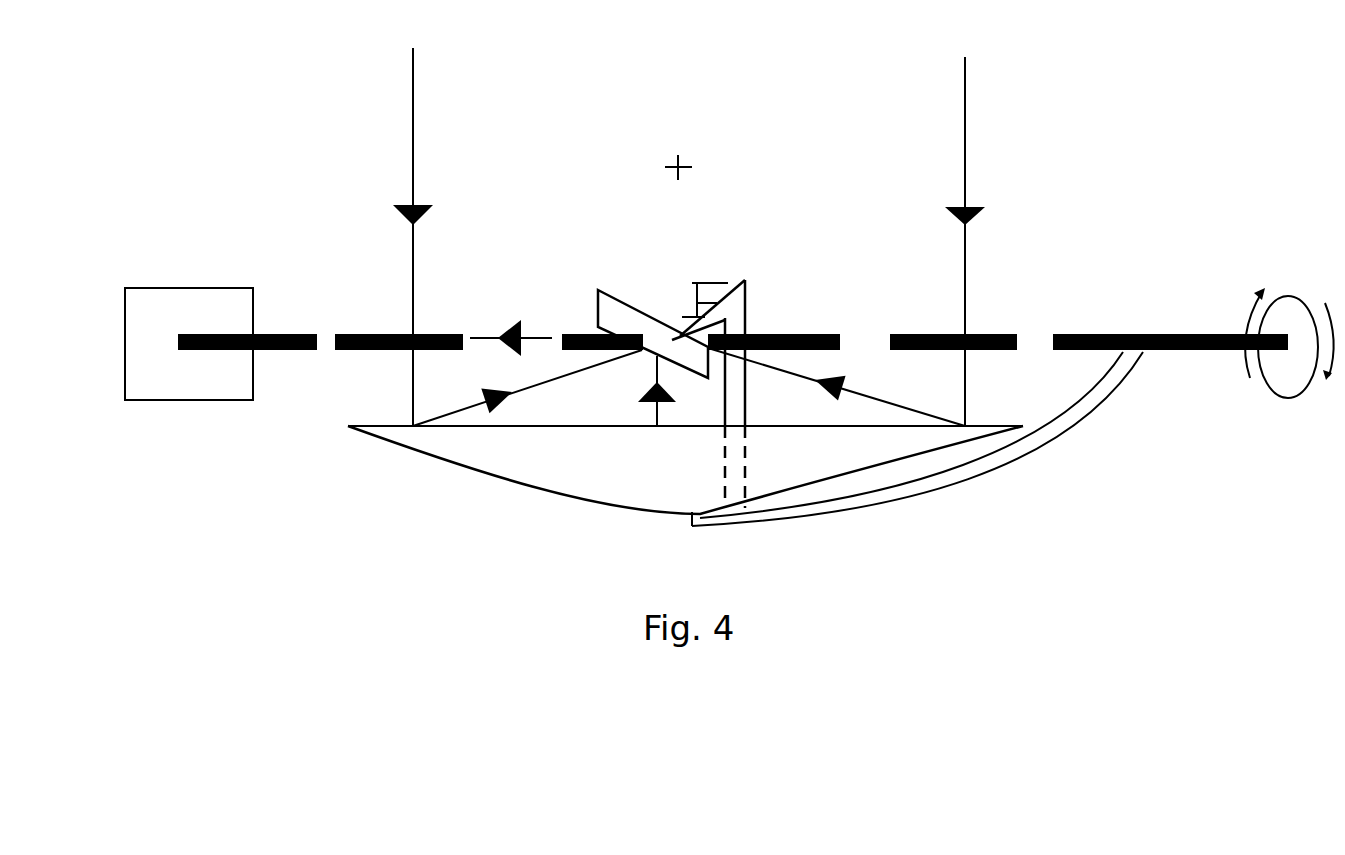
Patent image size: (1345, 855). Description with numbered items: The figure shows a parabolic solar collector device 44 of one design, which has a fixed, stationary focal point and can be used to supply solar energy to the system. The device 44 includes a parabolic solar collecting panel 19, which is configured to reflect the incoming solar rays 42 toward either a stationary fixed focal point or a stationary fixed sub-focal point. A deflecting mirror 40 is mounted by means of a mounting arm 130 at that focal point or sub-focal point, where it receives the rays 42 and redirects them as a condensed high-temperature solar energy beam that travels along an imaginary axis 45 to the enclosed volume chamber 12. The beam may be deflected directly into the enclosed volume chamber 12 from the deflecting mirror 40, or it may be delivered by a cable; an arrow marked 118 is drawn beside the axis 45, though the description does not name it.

The enclosed volume chamber 12 is at (150, 302).
The solar collecting panel 19 is at (480, 467).
The deflecting mirror 40 is at (605, 308).
The solar rays 42 is at (867, 393).
The parabolic solar collector device 44 is at (538, 68).
The imaginary axis 45 is at (365, 333).
The return beam arrow 118 is at (483, 337).
The mounting arm 130 is at (747, 305).